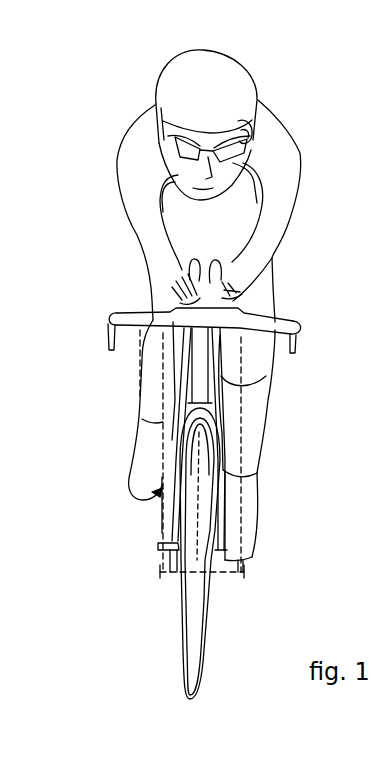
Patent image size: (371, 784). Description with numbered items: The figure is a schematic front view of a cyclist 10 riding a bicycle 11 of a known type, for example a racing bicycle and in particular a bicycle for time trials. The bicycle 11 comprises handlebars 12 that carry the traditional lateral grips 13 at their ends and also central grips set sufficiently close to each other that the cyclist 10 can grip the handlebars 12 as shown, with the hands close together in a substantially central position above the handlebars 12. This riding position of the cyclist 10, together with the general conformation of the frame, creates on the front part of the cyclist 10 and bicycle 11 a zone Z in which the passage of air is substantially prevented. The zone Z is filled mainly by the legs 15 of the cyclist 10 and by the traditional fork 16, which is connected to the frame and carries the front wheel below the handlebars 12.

The cyclist 10 is at (213, 311).
The bicycle 11 is at (221, 629).
The handlebars 12 is at (203, 309).
The lateral grips 13 is at (112, 318).
The legs 15 is at (153, 347).
The fork 16 is at (226, 500).
The zone Z is at (242, 579).